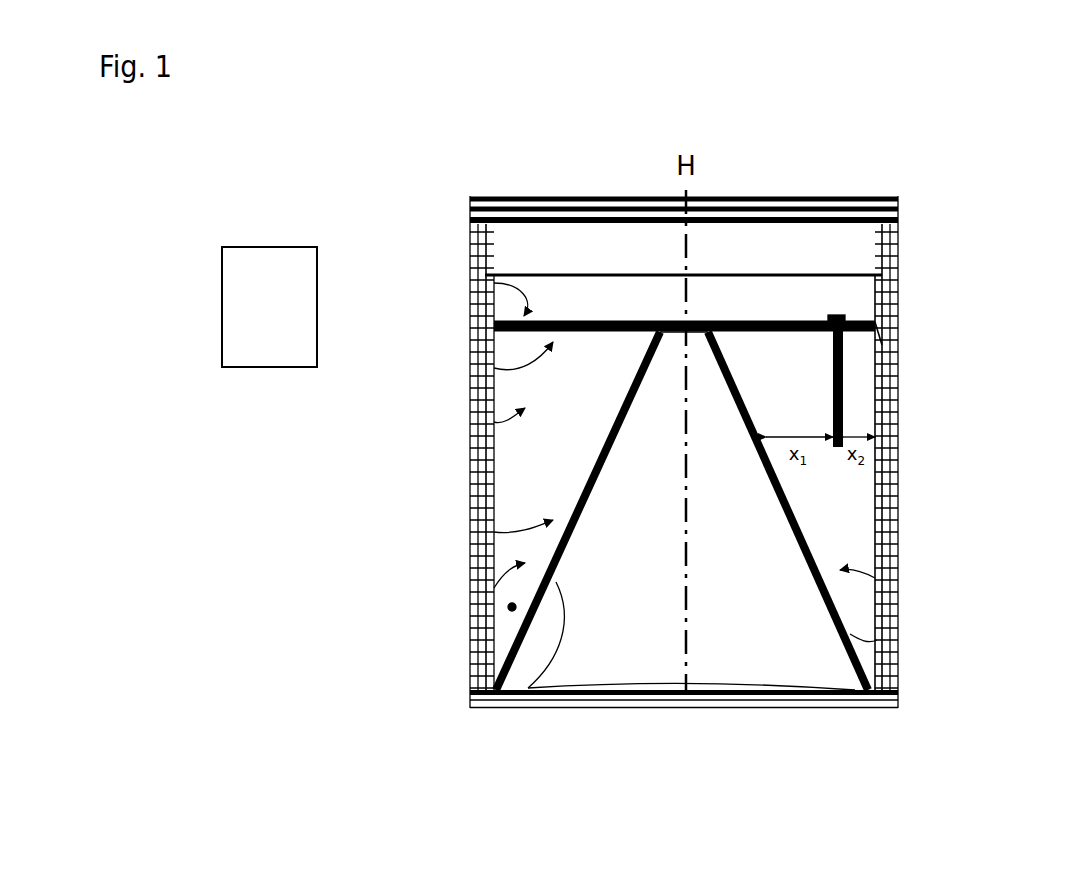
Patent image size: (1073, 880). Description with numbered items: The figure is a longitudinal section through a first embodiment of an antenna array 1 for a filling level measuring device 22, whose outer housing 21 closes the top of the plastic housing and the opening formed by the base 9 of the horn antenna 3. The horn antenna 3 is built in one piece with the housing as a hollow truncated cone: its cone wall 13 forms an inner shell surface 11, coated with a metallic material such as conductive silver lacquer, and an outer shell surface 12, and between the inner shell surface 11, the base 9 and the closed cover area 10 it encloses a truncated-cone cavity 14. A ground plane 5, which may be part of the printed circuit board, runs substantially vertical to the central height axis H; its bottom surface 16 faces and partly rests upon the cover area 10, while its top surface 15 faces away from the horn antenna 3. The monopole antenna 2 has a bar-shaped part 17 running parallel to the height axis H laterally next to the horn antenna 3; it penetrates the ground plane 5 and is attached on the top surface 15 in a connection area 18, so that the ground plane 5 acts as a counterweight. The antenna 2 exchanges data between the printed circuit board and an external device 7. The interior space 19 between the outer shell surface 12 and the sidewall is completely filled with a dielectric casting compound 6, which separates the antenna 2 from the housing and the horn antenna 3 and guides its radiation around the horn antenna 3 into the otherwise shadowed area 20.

The antenna array 1 is at (806, 262).
The antenna 2 is at (898, 478).
The horn antenna 3 is at (896, 594).
The ground plane 5 is at (470, 312).
The casting compound 6 is at (494, 588).
The external device 7 is at (300, 305).
The base 9 is at (705, 686).
The cover area 10 is at (695, 336).
The inner shell surface 11 is at (529, 688).
The outer shell surface 12 is at (494, 532).
The cone wall 13 is at (896, 676).
The cavity 14 is at (606, 491).
The top surface 15 is at (582, 320).
The bottom surface 16 is at (490, 366).
The bar-shaped part 17 is at (843, 401).
The connection area 18 is at (843, 317).
The interior space 19 is at (512, 607).
The shadowed area 20 is at (494, 422).
The outer housing 21 is at (476, 638).
The filling level measuring device 22 is at (977, 502).